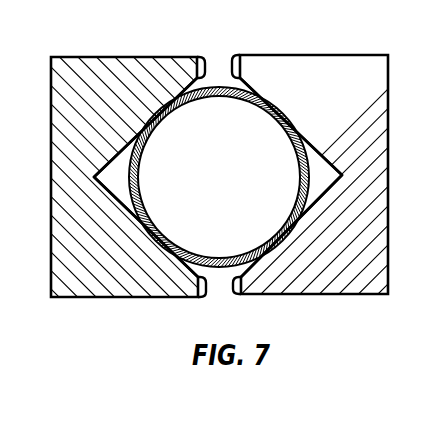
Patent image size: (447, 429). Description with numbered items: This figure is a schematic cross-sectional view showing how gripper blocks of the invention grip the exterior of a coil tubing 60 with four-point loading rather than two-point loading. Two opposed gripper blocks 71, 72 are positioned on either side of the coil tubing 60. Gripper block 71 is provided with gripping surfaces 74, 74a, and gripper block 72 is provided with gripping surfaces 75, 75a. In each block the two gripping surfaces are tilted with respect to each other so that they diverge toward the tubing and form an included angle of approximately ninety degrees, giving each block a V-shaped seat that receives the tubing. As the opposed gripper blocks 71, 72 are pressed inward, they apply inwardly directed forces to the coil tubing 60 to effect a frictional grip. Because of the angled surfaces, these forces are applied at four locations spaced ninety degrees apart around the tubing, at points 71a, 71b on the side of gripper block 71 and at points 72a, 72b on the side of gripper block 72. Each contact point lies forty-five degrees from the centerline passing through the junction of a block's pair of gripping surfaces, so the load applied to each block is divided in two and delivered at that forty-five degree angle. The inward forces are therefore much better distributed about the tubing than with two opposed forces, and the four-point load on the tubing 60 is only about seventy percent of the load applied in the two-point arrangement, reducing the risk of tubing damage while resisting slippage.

The coil tubing 60 is at (307, 178).
The gripper block 71 is at (67, 82).
The gripping point 71a is at (153, 110).
The gripping point 71b is at (157, 243).
The gripper block 72 is at (361, 85).
The gripping point 72a is at (288, 112).
The gripping point 72b is at (282, 237).
The gripping surface 74 is at (201, 74).
The gripping surface 74a is at (209, 283).
The gripping surface 75 is at (231, 76).
The gripping surface 75a is at (231, 285).